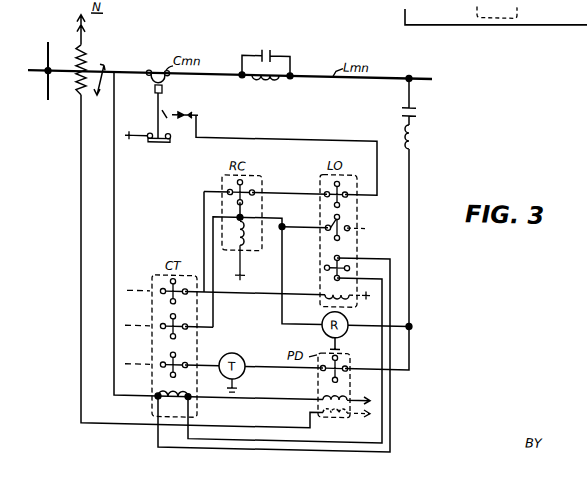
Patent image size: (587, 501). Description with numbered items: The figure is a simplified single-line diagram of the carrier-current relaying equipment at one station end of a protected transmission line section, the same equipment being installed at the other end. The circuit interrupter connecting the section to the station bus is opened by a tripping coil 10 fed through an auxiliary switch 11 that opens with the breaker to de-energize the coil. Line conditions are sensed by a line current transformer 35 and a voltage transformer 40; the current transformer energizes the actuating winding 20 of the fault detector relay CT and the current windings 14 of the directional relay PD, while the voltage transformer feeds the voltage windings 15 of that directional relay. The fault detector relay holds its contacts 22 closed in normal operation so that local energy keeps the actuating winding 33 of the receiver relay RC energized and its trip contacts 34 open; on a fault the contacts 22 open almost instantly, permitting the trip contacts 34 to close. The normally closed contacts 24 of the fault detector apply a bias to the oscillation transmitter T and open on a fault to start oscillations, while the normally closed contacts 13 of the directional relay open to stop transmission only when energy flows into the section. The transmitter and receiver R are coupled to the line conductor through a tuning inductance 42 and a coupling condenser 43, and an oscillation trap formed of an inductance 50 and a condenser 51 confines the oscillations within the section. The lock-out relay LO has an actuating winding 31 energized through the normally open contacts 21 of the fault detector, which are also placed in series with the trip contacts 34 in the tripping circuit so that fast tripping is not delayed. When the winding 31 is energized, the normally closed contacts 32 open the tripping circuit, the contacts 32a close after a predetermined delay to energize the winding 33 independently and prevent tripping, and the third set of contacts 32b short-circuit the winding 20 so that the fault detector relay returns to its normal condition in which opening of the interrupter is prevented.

The tripping coil 10 is at (190, 111).
The auxiliary switch 11 is at (158, 140).
The normally closed contacts of directional relay 13 is at (346, 358).
The current windings 14 is at (347, 386).
The voltage windings 15 is at (341, 411).
The actuating winding of fault detector relay 20 is at (165, 391).
The normally open contacts of fault detector relay 21 is at (164, 280).
The contacts of fault responsive relay 22 is at (170, 322).
The normally closed contacts of fault detector relay 24 is at (170, 360).
The actuating winding of lock-out relay 31 is at (324, 292).
The normally closed contacts of lock-out relay 32 is at (346, 184).
The contacts of lock-out relay 32a is at (339, 214).
The third set of contacts of lock-out relay 32b is at (327, 260).
The actuating winding of receiver relay 33 is at (249, 234).
The trip contacts 34 is at (254, 185).
The line current transformer 35 is at (109, 62).
The voltage transformer 40 is at (88, 51).
The tuning inductance 42 is at (416, 128).
The coupling condenser 43 is at (416, 103).
The inductance of oscillation trap 50 is at (271, 77).
The condenser of oscillation trap 51 is at (279, 50).